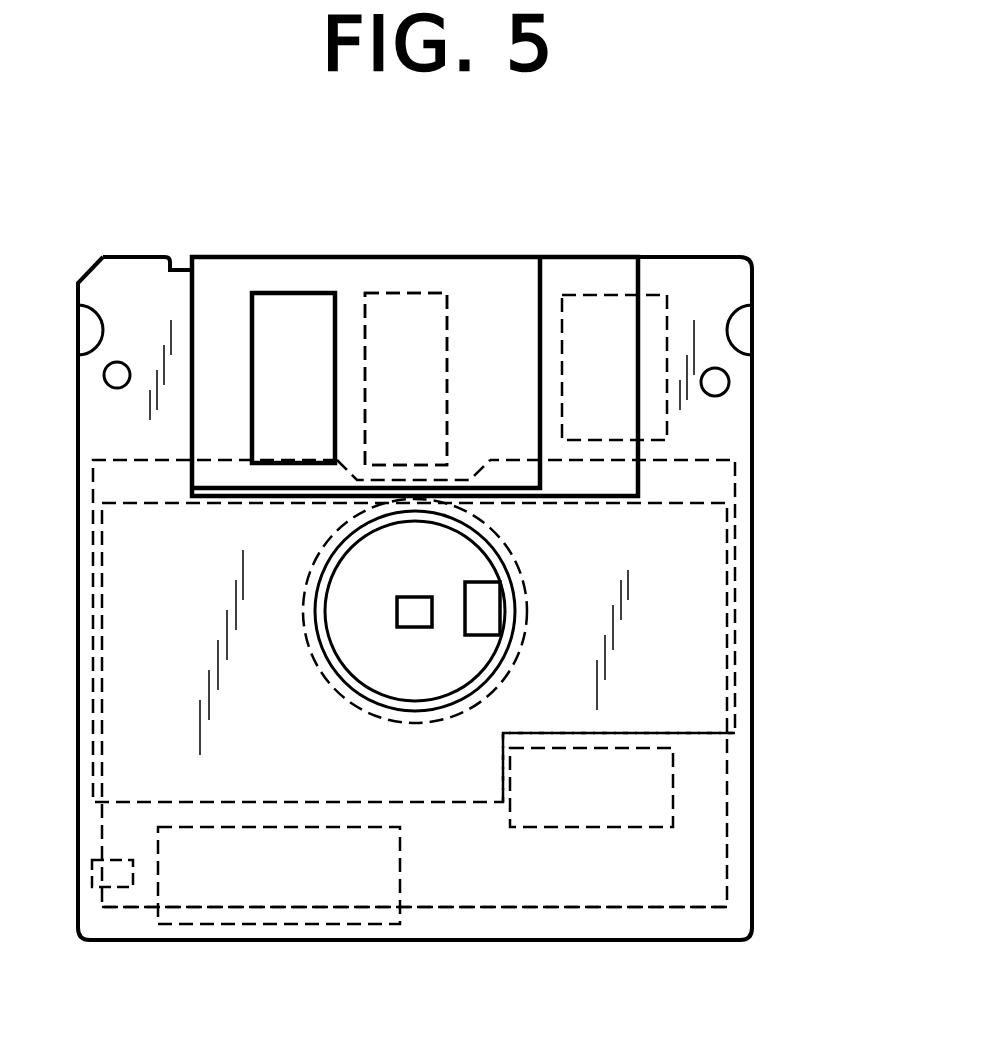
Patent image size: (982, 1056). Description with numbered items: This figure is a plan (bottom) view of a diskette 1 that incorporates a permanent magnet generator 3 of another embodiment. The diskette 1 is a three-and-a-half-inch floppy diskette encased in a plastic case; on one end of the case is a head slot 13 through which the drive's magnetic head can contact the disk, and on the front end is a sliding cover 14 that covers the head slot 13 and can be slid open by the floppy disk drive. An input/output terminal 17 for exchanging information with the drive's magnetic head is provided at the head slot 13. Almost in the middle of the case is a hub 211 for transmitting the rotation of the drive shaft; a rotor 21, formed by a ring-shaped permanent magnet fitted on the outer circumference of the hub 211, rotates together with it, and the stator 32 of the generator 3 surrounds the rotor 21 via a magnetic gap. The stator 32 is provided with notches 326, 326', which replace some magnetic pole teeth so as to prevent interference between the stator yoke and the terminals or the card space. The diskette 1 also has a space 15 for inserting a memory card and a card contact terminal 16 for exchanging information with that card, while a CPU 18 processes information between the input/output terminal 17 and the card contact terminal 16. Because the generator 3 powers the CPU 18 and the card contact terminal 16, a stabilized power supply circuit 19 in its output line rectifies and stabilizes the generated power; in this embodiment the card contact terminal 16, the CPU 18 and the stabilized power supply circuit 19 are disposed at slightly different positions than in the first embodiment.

The diskette 1 is at (755, 288).
The sliding cover 14 is at (218, 295).
The head slot 13 is at (398, 330).
The input/output terminal 17 is at (406, 379).
The CPU 18 is at (595, 337).
The notch 326 is at (439, 320).
The notch 326' is at (681, 732).
The stator 32 is at (476, 607).
The permanent magnet generator 3 is at (283, 762).
The space for inserting a memory card 15 is at (595, 865).
The hub 211 is at (455, 570).
The rotor 21 is at (425, 703).
The card contact terminal 16 is at (597, 783).
The stabilized power supply circuit 19 is at (232, 865).